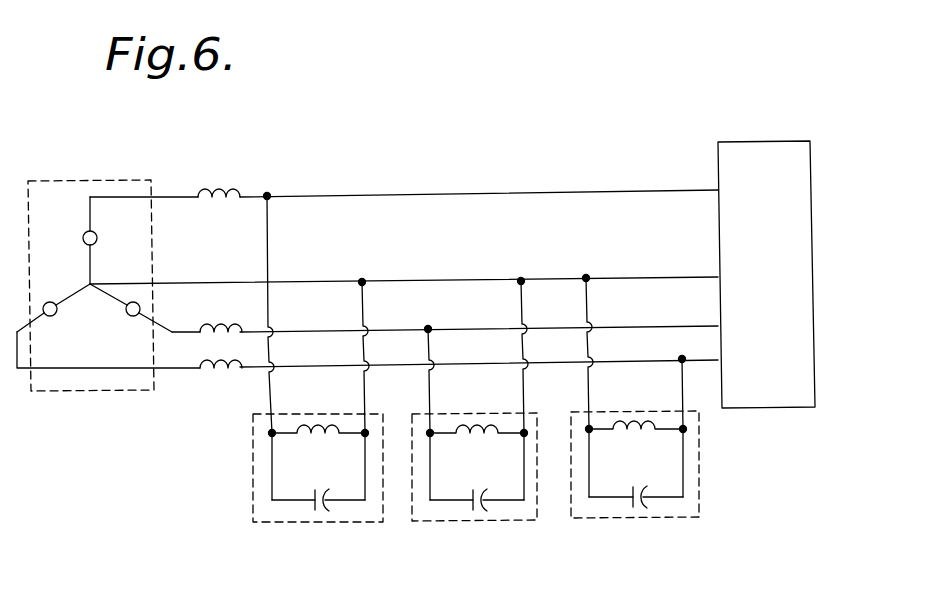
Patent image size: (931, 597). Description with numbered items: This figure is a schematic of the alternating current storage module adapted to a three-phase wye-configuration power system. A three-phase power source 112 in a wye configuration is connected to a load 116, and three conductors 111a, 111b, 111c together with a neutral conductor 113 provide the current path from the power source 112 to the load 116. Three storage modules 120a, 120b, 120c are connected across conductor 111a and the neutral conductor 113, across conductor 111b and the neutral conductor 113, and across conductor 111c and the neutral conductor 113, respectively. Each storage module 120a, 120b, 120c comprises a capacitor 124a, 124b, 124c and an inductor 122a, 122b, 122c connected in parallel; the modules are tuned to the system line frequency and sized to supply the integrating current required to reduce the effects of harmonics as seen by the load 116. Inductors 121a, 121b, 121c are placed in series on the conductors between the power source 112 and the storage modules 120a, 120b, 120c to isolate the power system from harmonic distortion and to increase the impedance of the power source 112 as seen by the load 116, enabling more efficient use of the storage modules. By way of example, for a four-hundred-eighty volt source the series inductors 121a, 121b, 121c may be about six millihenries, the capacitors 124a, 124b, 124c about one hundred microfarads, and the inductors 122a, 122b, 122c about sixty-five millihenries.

The three-phase power source 112 is at (63, 180).
The conductor 111a is at (366, 196).
The conductor 111b is at (483, 329).
The conductor 111c is at (641, 359).
The neutral conductor 113 is at (314, 282).
The load 116 is at (730, 165).
The series inductor 121a is at (210, 196).
The series inductor 121b is at (230, 324).
The series inductor 121c is at (222, 380).
The storage module 120a is at (267, 495).
The storage module 120b is at (497, 480).
The storage module 120c is at (683, 471).
The inductor 122a is at (318, 436).
The inductor 122b is at (495, 392).
The inductor 122c is at (645, 425).
The capacitor 124a is at (318, 512).
The capacitor 124b is at (478, 512).
The capacitor 124c is at (635, 512).